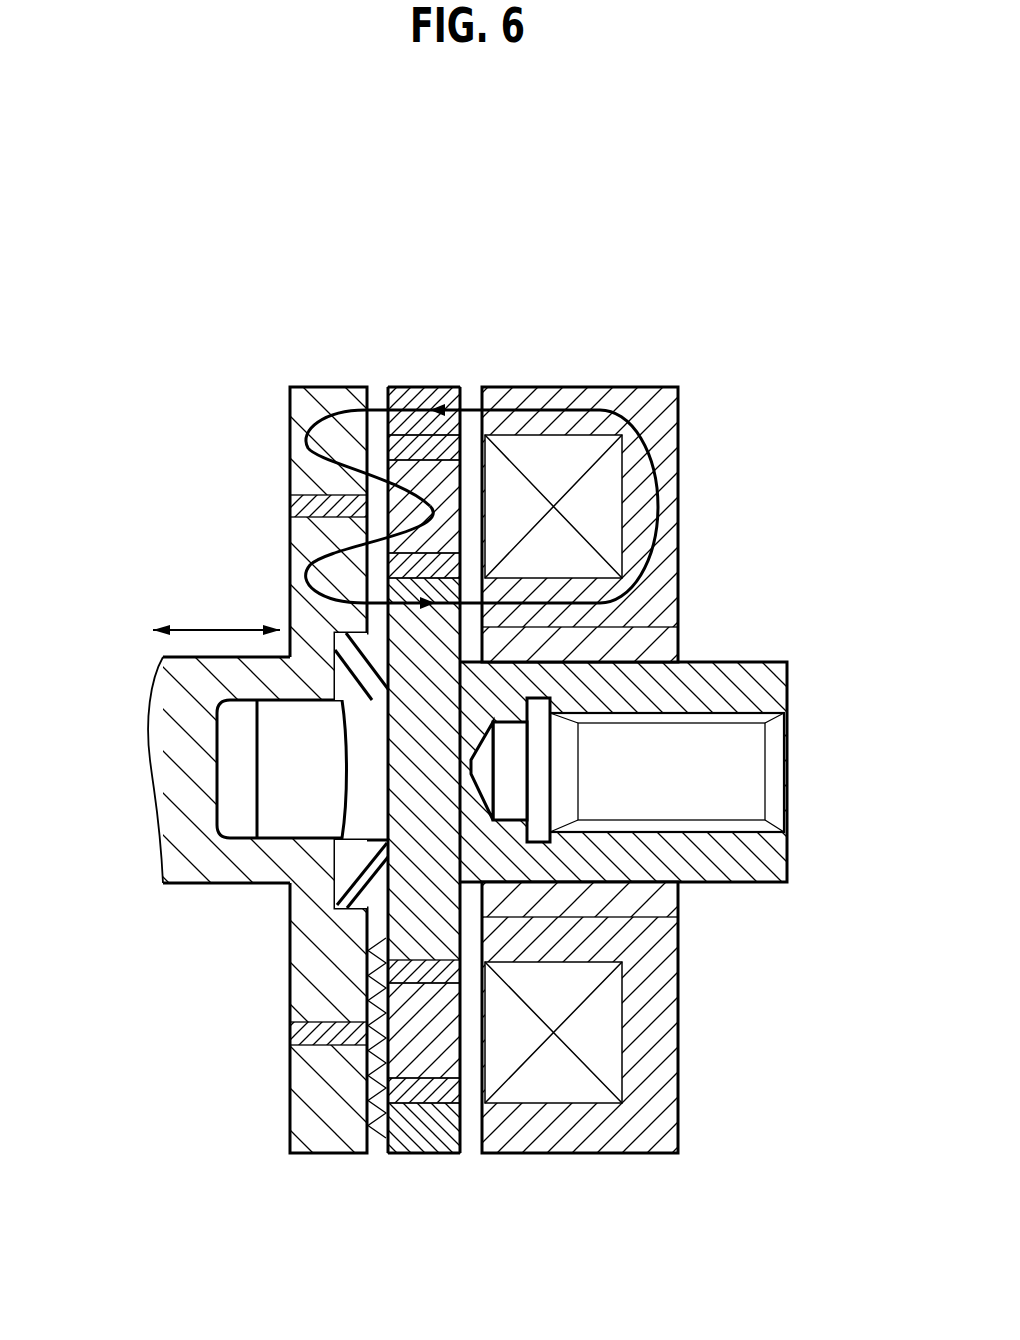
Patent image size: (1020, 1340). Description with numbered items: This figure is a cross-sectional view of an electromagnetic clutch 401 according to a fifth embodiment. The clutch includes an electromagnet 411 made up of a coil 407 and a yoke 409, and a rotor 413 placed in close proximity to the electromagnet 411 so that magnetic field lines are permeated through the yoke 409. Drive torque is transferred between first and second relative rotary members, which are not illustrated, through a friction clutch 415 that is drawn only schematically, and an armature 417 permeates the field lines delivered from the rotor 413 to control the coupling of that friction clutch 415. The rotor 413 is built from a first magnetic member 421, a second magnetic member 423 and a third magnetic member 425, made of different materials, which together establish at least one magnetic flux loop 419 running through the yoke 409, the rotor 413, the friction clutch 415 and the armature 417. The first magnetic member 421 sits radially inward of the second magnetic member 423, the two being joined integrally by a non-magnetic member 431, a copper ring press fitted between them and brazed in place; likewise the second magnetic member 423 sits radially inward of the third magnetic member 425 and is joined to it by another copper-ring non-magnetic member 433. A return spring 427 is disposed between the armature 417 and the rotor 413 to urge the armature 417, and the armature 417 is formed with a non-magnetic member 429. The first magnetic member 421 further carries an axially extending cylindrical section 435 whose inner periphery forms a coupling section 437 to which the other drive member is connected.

The electromagnetic clutch 401 is at (505, 300).
The coil 407 is at (623, 998).
The yoke 409 is at (657, 1100).
The electromagnet 411 is at (617, 1168).
The rotor 413 is at (432, 384).
The friction clutch 415 is at (377, 1152).
The armature 417 is at (313, 395).
The magnetic flux loop 419 is at (617, 390).
The first magnetic member 421 is at (420, 905).
The second magnetic member 423 is at (395, 985).
The third magnetic member 425 is at (422, 1160).
The return spring 427 is at (333, 697).
The non-magnetic member 429 is at (316, 1045).
The non-magnetic member 431 is at (313, 567).
The non-magnetic member 433 is at (313, 444).
The cylindrical section 435 is at (746, 662).
The coupling section 437 is at (740, 722).